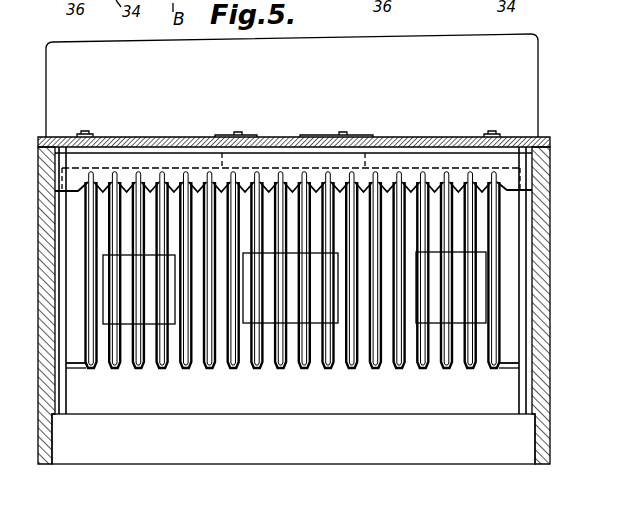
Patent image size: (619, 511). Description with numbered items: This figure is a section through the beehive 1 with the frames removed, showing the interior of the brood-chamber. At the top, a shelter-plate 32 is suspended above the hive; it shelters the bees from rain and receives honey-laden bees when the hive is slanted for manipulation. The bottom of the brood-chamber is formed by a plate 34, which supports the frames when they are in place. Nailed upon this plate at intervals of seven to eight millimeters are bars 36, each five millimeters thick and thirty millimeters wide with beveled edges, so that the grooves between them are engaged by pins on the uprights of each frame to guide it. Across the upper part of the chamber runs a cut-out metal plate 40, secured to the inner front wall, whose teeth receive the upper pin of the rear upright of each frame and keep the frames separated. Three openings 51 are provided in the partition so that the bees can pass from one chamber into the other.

The housing casing 1 is at (40, 262).
The shelter-plate 32 is at (292, 85).
The plate 34 is at (293, 285).
The bars 36 is at (293, 289).
The metal plate 40 is at (105, 173).
The openings 51 is at (127, 308).